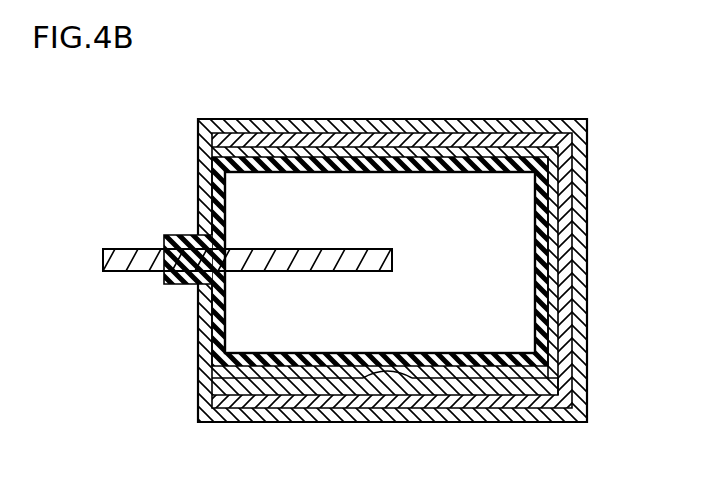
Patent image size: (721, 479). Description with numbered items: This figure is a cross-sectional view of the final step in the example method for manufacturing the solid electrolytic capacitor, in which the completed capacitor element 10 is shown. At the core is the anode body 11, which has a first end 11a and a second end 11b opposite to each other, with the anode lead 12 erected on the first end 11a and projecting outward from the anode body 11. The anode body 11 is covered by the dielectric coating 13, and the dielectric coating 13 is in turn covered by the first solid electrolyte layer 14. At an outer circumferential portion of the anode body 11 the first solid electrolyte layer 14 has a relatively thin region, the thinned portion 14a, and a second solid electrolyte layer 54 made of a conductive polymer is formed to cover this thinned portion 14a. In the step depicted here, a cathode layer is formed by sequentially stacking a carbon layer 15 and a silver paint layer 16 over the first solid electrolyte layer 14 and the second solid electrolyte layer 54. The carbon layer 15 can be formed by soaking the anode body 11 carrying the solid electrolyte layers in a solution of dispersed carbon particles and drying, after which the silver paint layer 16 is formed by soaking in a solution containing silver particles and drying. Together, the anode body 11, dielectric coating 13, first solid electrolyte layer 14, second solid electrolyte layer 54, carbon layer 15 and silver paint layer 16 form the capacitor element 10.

The capacitor element 10 is at (573, 98).
The anode body 11 is at (270, 333).
The first end 11a is at (237, 333).
The second end 11b is at (521, 333).
The anode lead 12 is at (138, 260).
The dielectric coating 13 is at (300, 372).
The first solid electrolyte layer 14 is at (337, 380).
The thinned portion 14a is at (384, 374).
The carbon layer 15 is at (427, 402).
The silver paint layer 16 is at (470, 415).
The second solid electrolyte layer 54 is at (553, 385).